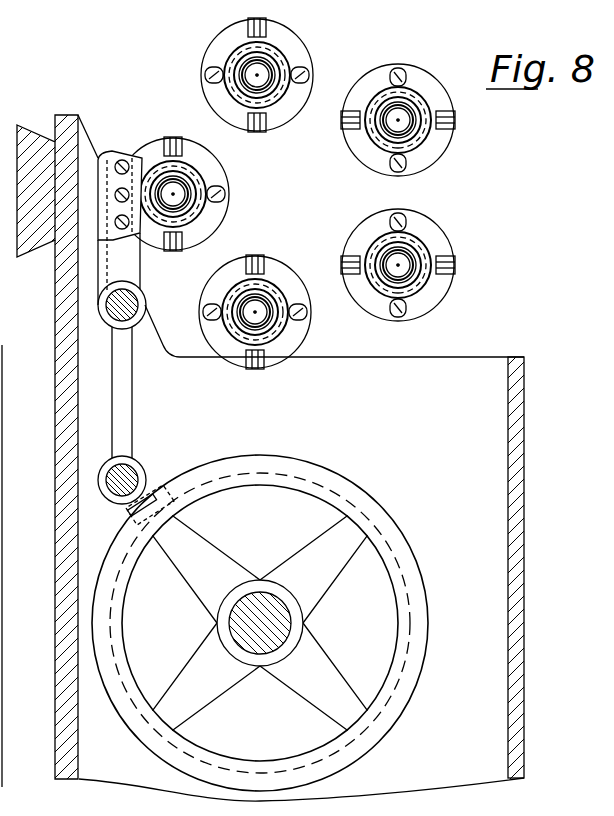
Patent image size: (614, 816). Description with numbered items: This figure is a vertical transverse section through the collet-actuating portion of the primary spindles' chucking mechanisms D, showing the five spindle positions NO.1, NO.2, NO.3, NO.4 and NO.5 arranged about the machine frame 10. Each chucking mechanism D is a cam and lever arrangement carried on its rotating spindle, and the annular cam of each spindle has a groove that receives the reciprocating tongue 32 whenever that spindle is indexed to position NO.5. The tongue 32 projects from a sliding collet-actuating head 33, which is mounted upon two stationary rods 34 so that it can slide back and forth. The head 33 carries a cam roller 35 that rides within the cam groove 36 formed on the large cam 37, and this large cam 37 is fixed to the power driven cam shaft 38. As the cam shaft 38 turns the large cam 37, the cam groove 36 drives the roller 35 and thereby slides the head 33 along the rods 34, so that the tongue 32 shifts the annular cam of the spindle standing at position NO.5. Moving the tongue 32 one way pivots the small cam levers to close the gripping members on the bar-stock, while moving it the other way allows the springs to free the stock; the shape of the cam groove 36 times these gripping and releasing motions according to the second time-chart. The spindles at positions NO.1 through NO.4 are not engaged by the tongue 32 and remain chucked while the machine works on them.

The frame wall 10 is at (60, 508).
The reciprocating tongue 32 is at (136, 156).
The sliding collet-actuating head 33 is at (122, 405).
The stationary rods 34 is at (110, 315).
The cam roller 35 is at (158, 492).
The cam groove 36 is at (253, 474).
The large cam 37 is at (424, 580).
The cam shaft 38 is at (278, 628).
The primary spindles' chucking mechanisms D is at (100, 270).
The pulley No.1 NO.1 is at (282, 63).
The pulley No.2 NO.2 is at (420, 147).
The pulley No.3 NO.3 is at (420, 290).
The pulley No.4 NO.4 is at (277, 332).
The position No. 5 NO.5 is at (208, 200).